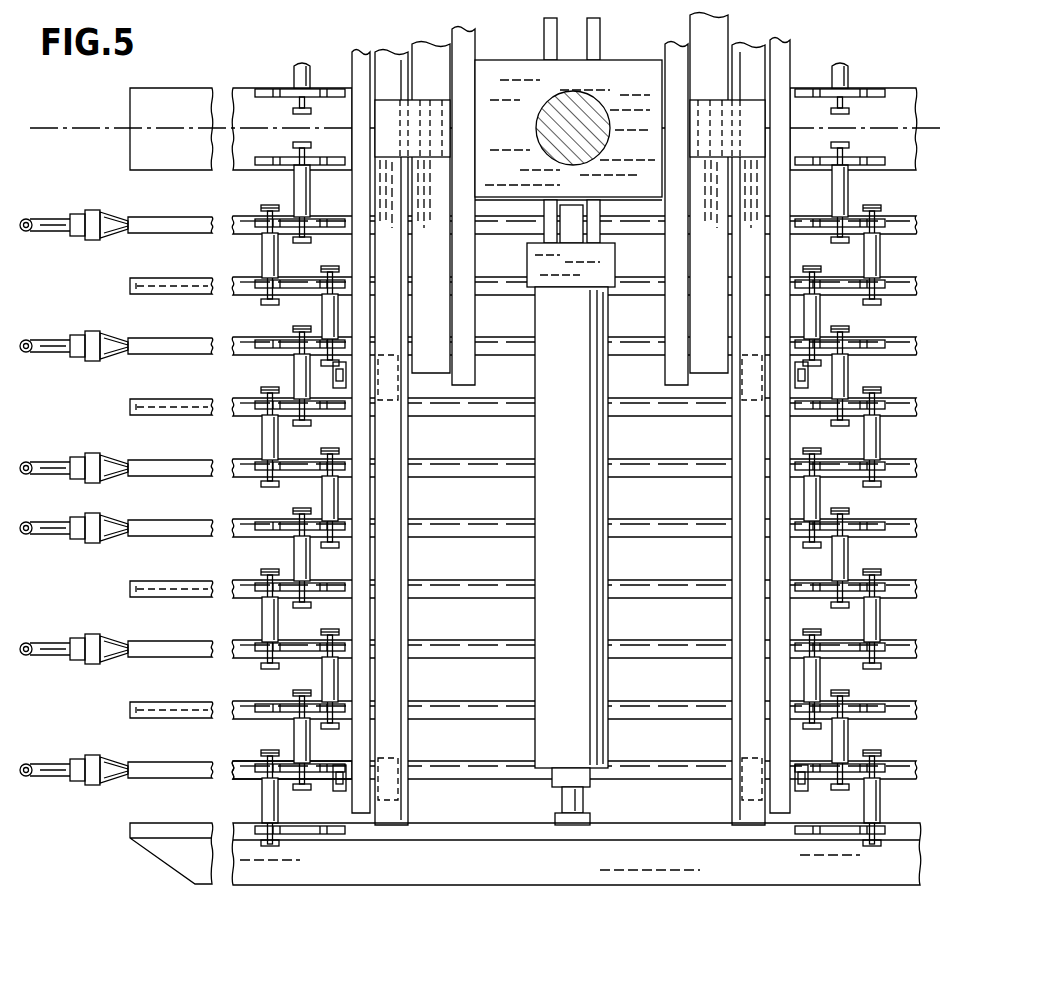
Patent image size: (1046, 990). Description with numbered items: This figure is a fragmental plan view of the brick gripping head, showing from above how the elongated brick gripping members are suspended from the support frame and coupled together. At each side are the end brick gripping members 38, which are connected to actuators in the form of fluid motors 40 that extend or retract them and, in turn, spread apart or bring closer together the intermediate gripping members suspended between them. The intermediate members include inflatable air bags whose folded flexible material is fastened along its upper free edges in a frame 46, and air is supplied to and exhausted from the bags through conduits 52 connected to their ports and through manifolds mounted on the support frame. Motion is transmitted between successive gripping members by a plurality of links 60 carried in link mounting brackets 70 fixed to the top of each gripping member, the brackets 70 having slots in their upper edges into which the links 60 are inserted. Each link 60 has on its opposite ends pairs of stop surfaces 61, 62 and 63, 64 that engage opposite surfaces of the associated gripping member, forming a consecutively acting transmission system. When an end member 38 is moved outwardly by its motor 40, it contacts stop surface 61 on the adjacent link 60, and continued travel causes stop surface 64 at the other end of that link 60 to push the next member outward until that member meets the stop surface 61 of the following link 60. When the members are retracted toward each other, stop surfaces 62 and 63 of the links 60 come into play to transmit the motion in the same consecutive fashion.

The end brick gripping member 38 is at (486, 867).
The fluid motor 40 is at (386, 397).
The frame 46 is at (502, 590).
The conduit 52 is at (53, 218).
The link 60 is at (265, 797).
The stop surface 61 is at (312, 782).
The stop surface 62 is at (265, 840).
The stop surface 63 is at (235, 768).
The stop surface 64 is at (262, 753).
The link mounting bracket 70 is at (328, 765).